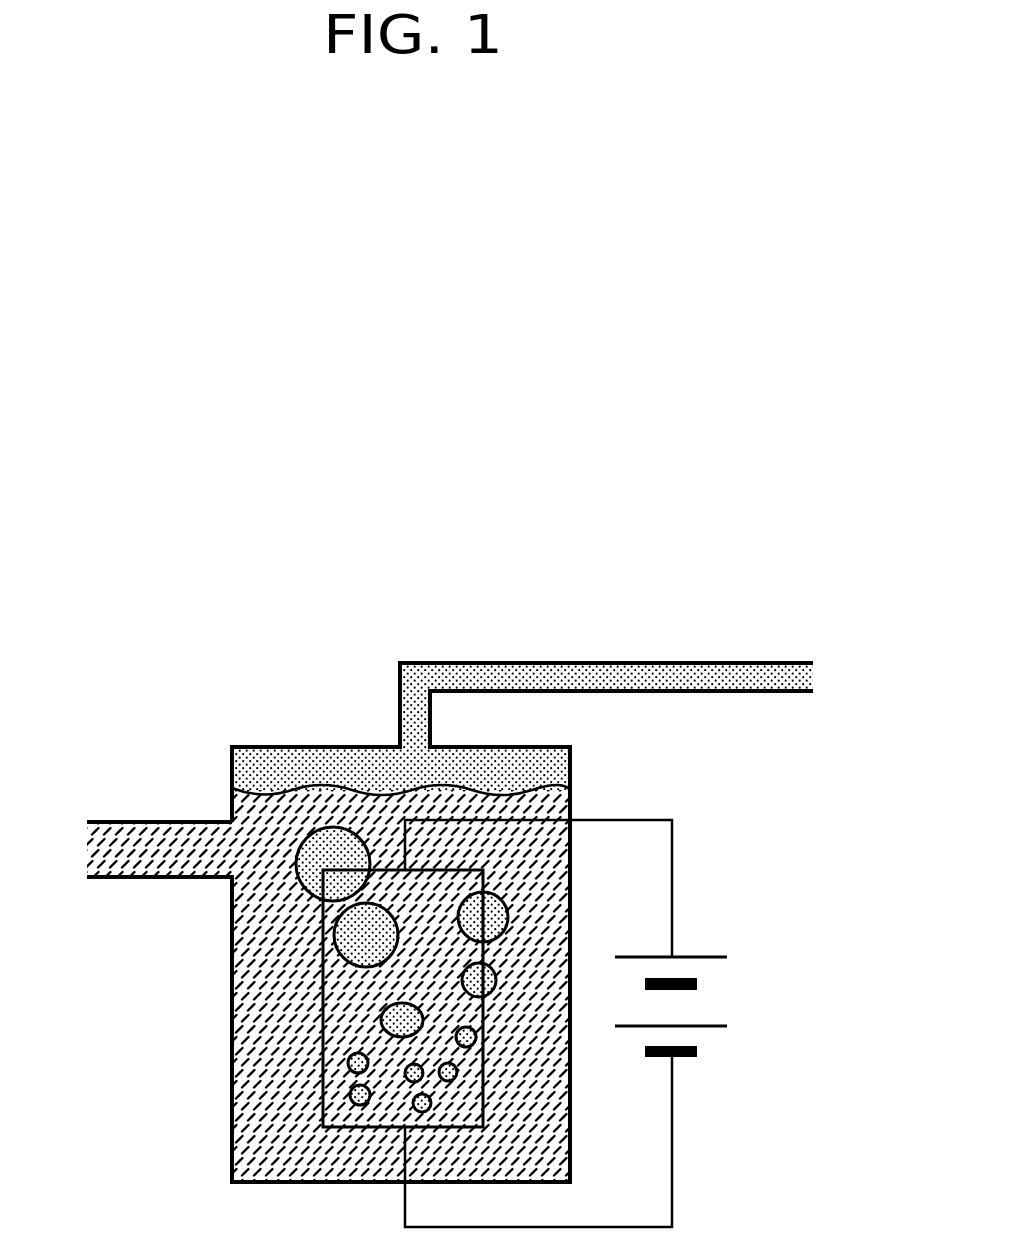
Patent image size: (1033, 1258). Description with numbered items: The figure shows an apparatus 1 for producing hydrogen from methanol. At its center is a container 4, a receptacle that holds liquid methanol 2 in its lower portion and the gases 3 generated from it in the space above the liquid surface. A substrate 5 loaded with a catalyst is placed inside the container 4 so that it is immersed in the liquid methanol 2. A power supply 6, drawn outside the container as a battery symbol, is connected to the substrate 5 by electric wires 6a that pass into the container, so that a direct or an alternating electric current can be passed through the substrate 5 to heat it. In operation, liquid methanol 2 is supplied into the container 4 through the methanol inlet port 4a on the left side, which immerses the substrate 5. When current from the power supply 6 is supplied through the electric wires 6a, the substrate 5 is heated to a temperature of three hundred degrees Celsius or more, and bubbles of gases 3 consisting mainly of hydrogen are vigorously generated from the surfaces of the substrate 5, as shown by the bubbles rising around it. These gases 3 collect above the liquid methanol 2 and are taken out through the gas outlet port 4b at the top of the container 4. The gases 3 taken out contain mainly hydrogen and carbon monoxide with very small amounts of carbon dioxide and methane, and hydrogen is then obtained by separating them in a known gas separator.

The apparatus for producing hydrogen from methanol 1 is at (503, 538).
The liquid methanol 2 is at (52, 850).
The gases 3 is at (333, 853).
The container 4 is at (367, 673).
The methanol inlet port 4a is at (125, 820).
The gas outlet port 4b is at (528, 662).
The substrate 5 is at (355, 1002).
The power supply 6 is at (767, 1010).
The electric wires 6a is at (673, 887).